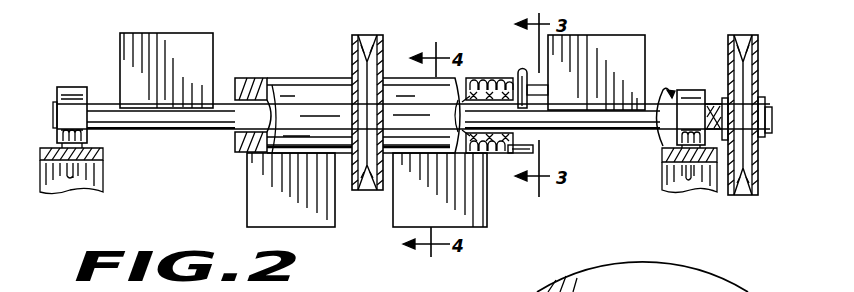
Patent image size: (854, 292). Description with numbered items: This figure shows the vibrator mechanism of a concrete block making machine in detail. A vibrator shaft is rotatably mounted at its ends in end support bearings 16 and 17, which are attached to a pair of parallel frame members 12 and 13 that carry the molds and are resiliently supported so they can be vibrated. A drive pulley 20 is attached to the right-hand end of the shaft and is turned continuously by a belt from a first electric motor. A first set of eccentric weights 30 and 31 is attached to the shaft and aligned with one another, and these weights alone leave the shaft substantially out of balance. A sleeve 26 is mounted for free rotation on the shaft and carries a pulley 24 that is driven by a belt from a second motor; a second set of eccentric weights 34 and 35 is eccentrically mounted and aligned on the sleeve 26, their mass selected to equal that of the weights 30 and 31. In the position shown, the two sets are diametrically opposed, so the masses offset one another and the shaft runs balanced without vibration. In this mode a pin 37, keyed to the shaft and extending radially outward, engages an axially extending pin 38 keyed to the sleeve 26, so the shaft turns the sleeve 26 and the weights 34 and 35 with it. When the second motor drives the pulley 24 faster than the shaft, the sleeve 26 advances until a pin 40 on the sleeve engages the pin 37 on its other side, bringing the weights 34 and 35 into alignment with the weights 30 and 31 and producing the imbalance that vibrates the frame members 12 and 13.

The frame member 12 is at (662, 155).
The frame member 13 is at (105, 150).
The end support bearing 16 is at (693, 90).
The end support bearing 17 is at (79, 87).
The drive pulley 20 is at (758, 60).
The pulley 24 is at (352, 50).
The sleeve 26 is at (308, 79).
The eccentric weight 30 is at (175, 33).
The eccentric weight 31 is at (622, 35).
The eccentric weight 34 is at (247, 211).
The eccentric weight 35 is at (474, 213).
The pin 37 is at (523, 68).
The axially extending pin 38 is at (510, 80).
The pin 40 is at (518, 156).